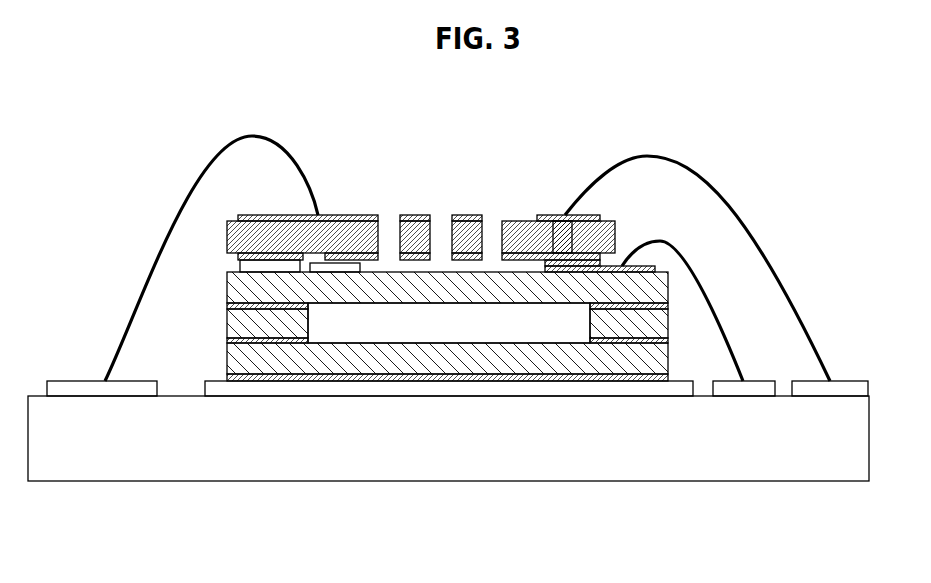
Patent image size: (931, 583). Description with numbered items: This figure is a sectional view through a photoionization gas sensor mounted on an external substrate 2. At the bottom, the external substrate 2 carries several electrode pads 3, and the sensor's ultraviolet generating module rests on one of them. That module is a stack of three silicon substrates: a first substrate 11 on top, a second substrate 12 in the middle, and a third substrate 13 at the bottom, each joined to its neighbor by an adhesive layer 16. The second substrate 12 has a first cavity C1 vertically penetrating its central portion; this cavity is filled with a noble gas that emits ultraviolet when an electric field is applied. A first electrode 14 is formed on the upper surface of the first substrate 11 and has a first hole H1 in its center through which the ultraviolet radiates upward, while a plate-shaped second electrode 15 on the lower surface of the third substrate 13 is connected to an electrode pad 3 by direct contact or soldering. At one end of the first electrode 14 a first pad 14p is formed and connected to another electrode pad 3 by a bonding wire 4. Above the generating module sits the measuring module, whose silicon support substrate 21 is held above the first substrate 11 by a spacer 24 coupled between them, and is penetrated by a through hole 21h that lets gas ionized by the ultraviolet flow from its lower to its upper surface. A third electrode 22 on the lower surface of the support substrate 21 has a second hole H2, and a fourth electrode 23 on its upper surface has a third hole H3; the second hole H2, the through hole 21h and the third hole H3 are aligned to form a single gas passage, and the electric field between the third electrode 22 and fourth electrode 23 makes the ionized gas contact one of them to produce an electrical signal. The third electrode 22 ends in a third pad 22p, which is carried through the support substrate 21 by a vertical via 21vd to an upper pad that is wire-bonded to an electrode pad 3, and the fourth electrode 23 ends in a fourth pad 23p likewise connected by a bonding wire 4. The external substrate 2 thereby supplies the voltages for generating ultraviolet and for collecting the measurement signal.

The external substrate 2 is at (570, 455).
The electrode pad 3 is at (70, 390).
The bonding wire 4 is at (230, 143).
The first substrate 11 is at (242, 284).
The second substrate 12 is at (227, 295).
The third substrate 13 is at (235, 358).
The first electrode 14 is at (320, 268).
The first pad 14p is at (658, 274).
The second electrode 15 is at (227, 380).
The adhesive layer 16 is at (250, 322).
The support substrate 21 is at (614, 230).
The through hole 21h is at (490, 242).
The vertical division 21vd is at (552, 228).
The third electrode 22 is at (391, 258).
The third pad 22p is at (566, 216).
The fourth electrode 23 is at (418, 217).
The fourth pad 23p is at (325, 217).
The spacer 24 is at (218, 262).
The first cavity C1 is at (453, 326).
The first hole H1 is at (444, 272).
The second hole H2 is at (389, 258).
The third hole H3 is at (493, 217).